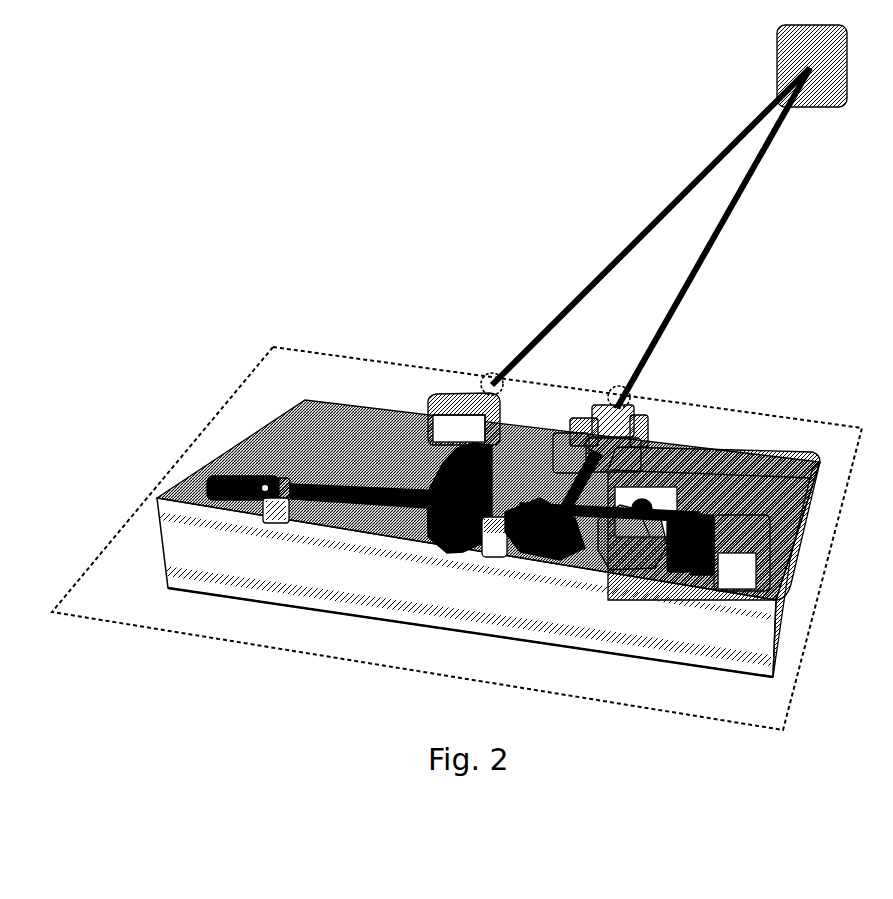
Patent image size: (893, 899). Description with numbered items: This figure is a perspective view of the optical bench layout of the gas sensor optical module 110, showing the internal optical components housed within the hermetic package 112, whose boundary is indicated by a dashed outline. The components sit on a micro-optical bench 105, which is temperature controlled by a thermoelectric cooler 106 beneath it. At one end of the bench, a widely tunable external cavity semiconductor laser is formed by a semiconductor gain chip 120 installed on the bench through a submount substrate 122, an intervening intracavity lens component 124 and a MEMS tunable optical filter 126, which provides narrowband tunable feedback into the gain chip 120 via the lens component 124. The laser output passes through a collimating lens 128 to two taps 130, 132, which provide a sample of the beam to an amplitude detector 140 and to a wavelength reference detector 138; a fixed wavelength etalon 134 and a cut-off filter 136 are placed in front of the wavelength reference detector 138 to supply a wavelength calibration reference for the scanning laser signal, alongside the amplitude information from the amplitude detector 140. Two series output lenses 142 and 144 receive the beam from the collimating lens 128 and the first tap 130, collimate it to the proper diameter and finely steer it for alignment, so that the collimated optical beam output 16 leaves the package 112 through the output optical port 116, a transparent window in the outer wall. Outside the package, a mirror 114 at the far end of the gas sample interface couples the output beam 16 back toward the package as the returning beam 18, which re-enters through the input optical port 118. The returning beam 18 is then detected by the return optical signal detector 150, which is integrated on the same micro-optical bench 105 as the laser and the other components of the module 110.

The collimated optical beam output 16 is at (697, 255).
The returning beam 18 is at (560, 268).
The optical bench 105 is at (275, 440).
The thermoelectric cooler 106 is at (327, 612).
The optical module 110 is at (318, 330).
The hermetic package 112 is at (400, 668).
The mirror 114 is at (778, 62).
The output optical port 116 is at (605, 396).
The input optical port 118 is at (497, 372).
The semiconductor gain chip 120 is at (225, 487).
The submount substrate 122 is at (172, 510).
The intracavity lens component 124 is at (277, 518).
The MEMS tunable optical filter 126 is at (437, 540).
The collimating lens 128 is at (488, 550).
The first tap 130 is at (545, 556).
The second tap 132 is at (620, 563).
The fixed wavelength etalon 134 is at (672, 572).
The cut-off filter 136 is at (695, 574).
The wavelength reference detector 138 is at (745, 592).
The amplitude detector 140 is at (685, 475).
The first output lens 142 is at (630, 455).
The second output lens 144 is at (640, 432).
The return optical signal detector 150 is at (445, 400).